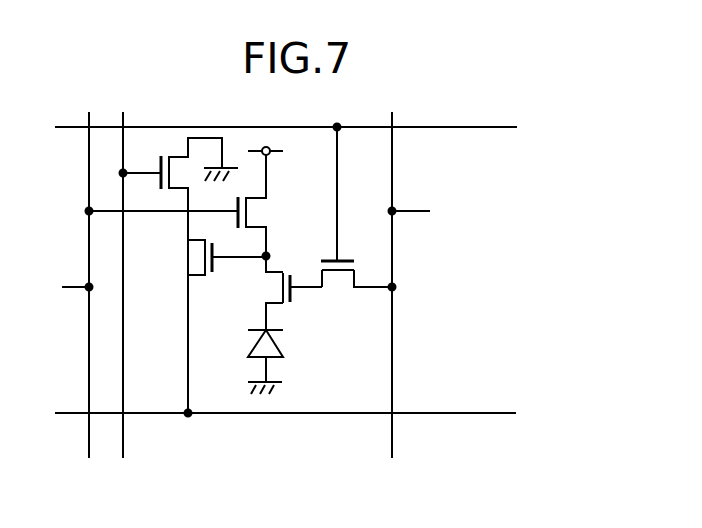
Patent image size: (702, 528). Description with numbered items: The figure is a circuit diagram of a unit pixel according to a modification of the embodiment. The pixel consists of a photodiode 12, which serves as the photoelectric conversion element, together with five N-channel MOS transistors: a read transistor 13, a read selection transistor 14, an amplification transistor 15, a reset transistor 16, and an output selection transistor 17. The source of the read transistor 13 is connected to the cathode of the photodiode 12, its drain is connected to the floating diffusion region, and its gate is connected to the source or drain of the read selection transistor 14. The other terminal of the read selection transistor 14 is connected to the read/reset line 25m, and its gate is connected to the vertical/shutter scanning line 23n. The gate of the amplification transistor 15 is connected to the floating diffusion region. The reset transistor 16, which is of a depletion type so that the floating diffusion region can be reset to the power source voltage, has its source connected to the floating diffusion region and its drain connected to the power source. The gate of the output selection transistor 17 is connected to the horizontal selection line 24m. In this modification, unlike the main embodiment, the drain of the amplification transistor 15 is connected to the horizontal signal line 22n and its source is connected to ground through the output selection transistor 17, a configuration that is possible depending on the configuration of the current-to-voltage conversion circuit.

The photodiode 12 is at (278, 342).
The read transistor 13 is at (280, 288).
The read selection transistor 14 is at (334, 272).
The amplification transistor 15 is at (202, 257).
The reset transistor 16 is at (255, 211).
The output selection transistor 17 is at (182, 186).
The horizontal signal line 22n is at (440, 410).
The vertical/shutter scanning line 23n is at (443, 129).
The horizontal selection line 24m is at (124, 442).
The read/reset line 25m is at (393, 442).